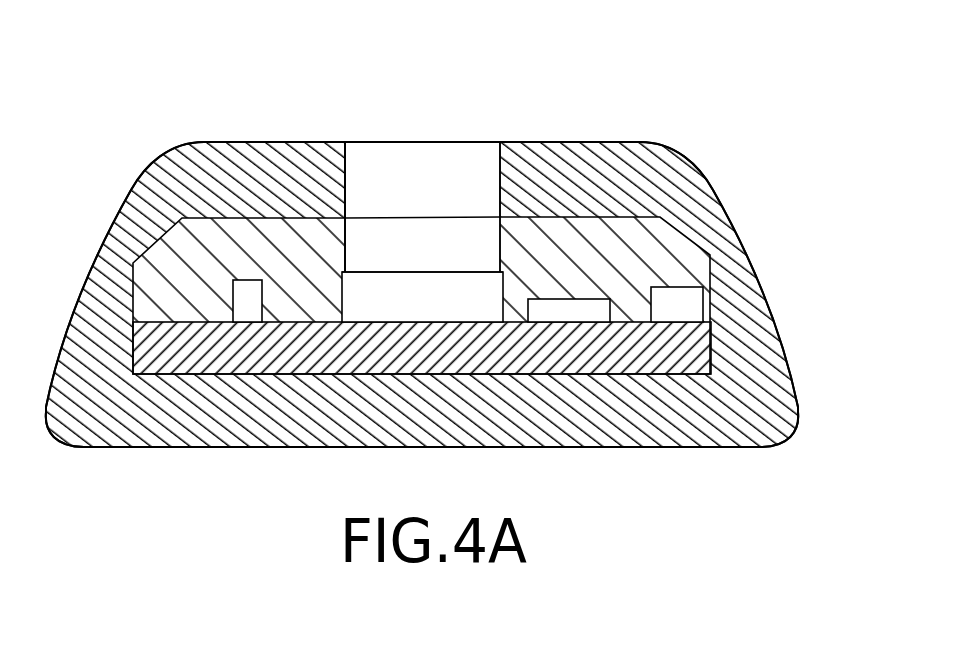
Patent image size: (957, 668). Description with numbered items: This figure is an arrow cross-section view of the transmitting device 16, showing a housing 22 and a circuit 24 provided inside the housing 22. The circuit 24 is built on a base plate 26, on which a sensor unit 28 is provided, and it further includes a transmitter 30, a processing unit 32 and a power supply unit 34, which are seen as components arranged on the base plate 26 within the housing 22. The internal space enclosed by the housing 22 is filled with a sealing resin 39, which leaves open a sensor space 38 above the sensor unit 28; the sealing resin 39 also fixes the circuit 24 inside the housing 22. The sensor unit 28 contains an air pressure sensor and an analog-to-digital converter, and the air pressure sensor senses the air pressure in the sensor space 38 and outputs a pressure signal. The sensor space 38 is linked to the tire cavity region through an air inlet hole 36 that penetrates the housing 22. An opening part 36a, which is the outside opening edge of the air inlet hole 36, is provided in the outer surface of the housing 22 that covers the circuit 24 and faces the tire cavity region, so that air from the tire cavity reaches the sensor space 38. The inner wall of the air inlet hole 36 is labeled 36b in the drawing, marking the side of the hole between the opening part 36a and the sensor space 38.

The transmitting device 16 is at (805, 153).
The housing 22 is at (130, 228).
The circuit 24 is at (402, 257).
The base plate 26 is at (443, 352).
The sensor unit 28 is at (406, 272).
The transmitter 30 is at (677, 297).
The processing unit 32 is at (568, 308).
The power supply unit 34 is at (248, 298).
The air inlet hole 36 is at (405, 162).
The opening part 36a is at (464, 142).
The inner wall of opening 36b is at (366, 217).
The sensor space 38 is at (470, 250).
The sealing resin 39 is at (520, 250).